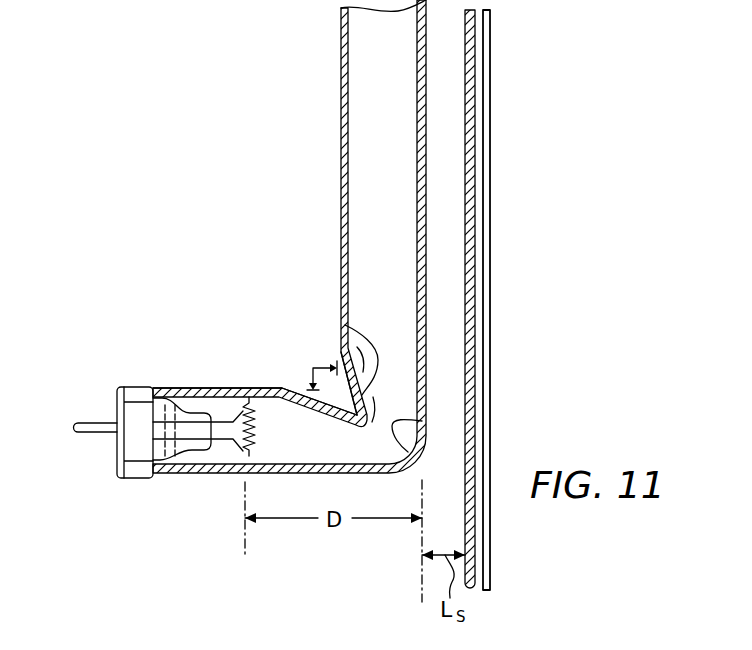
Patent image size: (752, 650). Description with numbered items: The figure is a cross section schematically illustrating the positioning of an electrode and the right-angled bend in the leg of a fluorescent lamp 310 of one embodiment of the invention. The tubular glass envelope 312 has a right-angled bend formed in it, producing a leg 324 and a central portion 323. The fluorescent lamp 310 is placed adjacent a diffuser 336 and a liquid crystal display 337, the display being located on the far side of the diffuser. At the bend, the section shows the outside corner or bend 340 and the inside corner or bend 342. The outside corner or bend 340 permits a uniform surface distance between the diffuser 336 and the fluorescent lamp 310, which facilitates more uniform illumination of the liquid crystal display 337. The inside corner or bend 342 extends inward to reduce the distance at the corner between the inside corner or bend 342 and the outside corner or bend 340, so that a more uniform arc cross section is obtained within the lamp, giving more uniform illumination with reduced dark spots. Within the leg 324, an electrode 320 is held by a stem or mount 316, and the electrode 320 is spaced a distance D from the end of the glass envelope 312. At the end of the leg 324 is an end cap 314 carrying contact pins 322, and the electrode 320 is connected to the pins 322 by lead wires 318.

The fluorescent lamp 310 is at (324, 191).
The glass envelope 312 is at (341, 148).
The end cap 314 is at (138, 393).
The stem or mount 316 is at (197, 460).
The lead wires 318 is at (233, 417).
The electrode 320 is at (255, 428).
The contact pins 322 is at (93, 423).
The central portion 323 is at (341, 272).
The leg 324 is at (178, 462).
The diffuser 336 is at (466, 116).
The liquid crystal display 337 is at (490, 176).
The outside corner or bend 340 is at (422, 421).
The inside corner or bend 342 is at (345, 325).